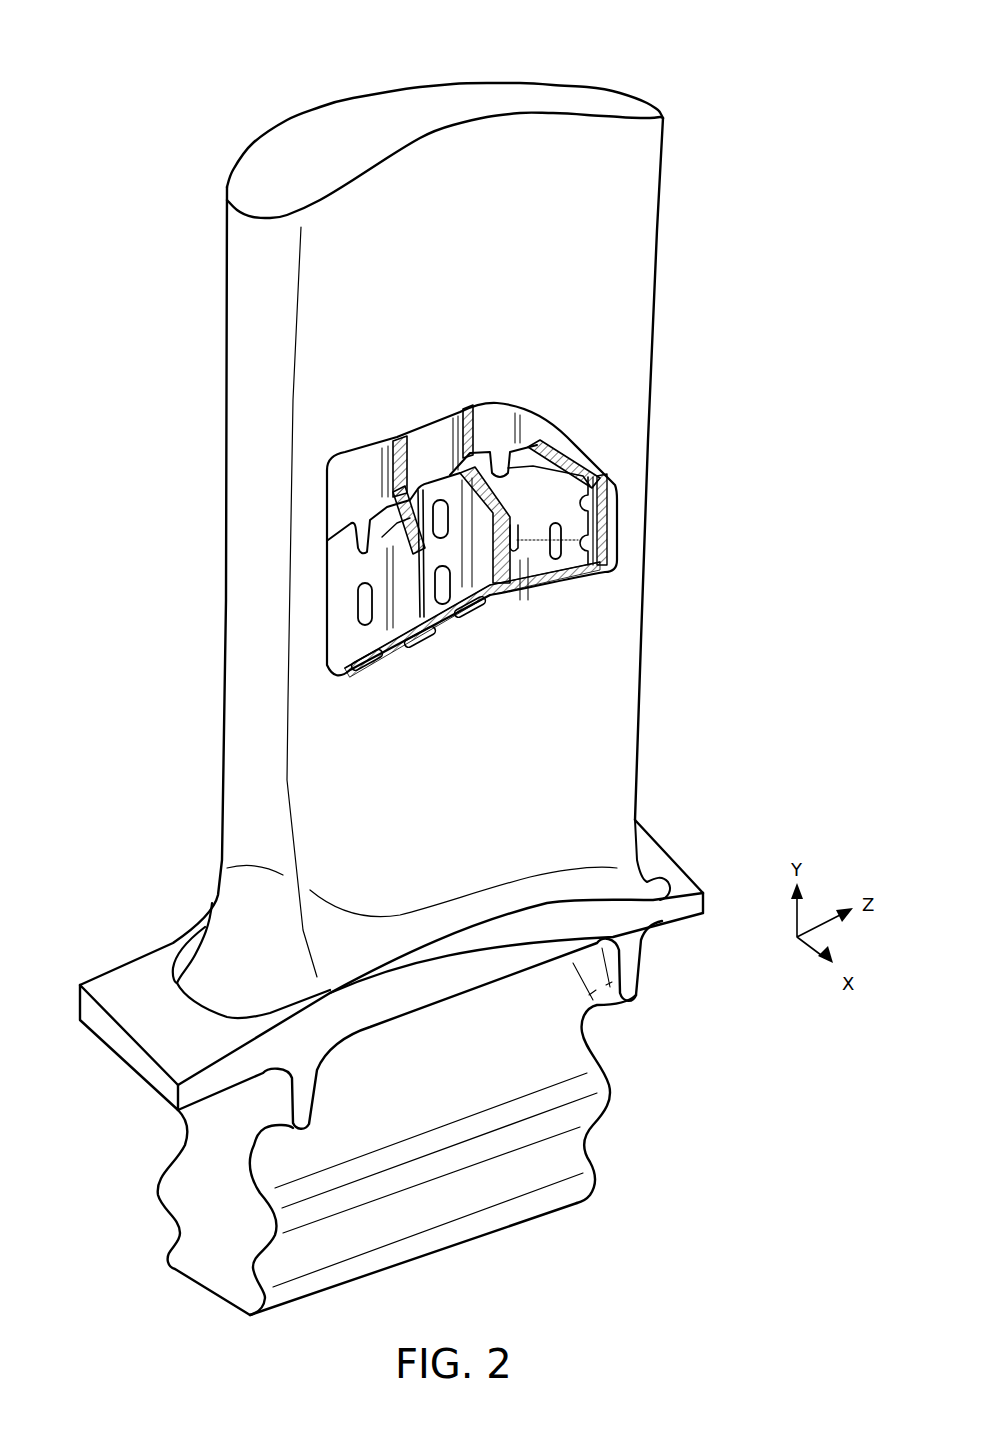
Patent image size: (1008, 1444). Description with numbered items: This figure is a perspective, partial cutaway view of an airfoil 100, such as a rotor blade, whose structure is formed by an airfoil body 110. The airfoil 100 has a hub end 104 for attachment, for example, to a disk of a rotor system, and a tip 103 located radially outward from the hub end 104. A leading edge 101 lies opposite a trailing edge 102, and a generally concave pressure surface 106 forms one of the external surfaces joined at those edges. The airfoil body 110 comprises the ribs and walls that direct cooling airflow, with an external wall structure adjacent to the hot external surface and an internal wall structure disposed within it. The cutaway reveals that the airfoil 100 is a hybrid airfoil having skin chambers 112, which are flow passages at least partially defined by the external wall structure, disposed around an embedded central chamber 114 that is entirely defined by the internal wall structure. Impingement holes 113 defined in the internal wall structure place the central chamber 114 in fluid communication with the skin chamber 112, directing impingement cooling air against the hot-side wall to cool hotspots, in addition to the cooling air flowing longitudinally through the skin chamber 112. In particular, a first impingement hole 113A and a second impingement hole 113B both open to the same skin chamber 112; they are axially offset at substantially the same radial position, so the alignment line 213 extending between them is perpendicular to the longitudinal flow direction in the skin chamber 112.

The airfoil 100 is at (117, 100).
The leading edge 101 is at (243, 436).
The trailing edge 102 is at (656, 328).
The tip 103 is at (342, 44).
The hub end 104 is at (493, 1013).
The pressure surface 106 is at (567, 715).
The airfoil body 110 is at (598, 580).
The skin chamber 112 is at (493, 417).
The impingement hole 113 is at (443, 517).
The first impingement hole 113A is at (520, 530).
The second impingement hole 113B is at (567, 533).
The central chamber 114 is at (437, 548).
The alignment line 213 is at (573, 563).